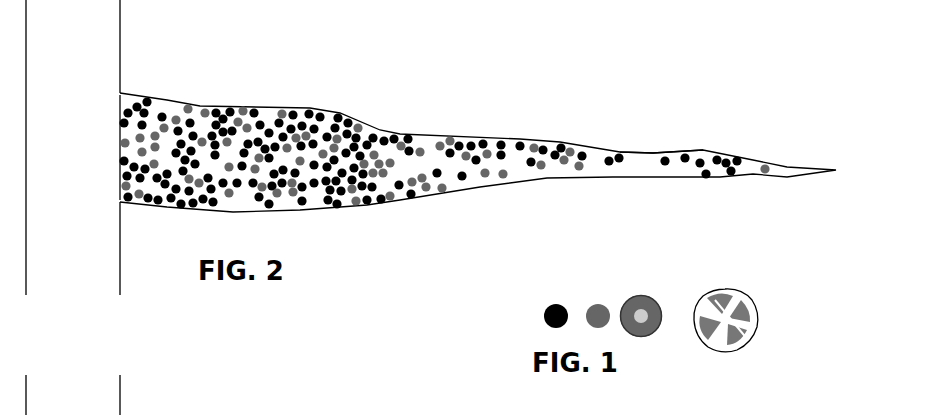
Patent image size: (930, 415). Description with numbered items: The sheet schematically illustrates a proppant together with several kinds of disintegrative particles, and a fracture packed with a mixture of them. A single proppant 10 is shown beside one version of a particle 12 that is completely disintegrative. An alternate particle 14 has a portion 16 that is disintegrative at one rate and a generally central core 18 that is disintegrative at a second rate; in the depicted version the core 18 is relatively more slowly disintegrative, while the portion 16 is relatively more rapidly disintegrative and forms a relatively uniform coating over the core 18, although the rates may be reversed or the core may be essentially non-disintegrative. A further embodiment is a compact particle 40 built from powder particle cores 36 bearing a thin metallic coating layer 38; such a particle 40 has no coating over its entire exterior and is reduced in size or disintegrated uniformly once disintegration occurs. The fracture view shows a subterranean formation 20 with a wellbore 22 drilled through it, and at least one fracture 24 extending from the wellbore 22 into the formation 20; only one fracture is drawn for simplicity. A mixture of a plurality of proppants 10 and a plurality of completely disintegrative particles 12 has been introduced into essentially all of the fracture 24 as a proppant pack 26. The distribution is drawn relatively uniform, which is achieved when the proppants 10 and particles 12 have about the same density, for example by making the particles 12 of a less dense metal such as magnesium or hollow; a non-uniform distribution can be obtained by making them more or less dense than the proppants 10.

In FIG. 2, the proppant 10 is at (380, 131).
In FIG. 1, the proppant 10 is at (545, 326).
In FIG. 2, the particle 12 is at (533, 140).
In FIG. 1, the particle 12 is at (598, 300).
In FIG. 1, the particle 14 is at (648, 288).
In FIG. 1, the portion 16 is at (660, 307).
In FIG. 1, the generally central core 18 is at (628, 335).
In FIG. 2, the subterranean formation 20 is at (246, 53).
In FIG. 2, the wellbore 22 is at (83, 72).
In FIG. 2, the fracture 24 is at (663, 152).
In FIG. 2, the proppant pack 26 is at (114, 139).
In FIG. 1, the powder particle cores 36 is at (755, 315).
In FIG. 1, the thin metallic coating layer 38 is at (755, 337).
In FIG. 1, the compact particle 40 is at (749, 283).